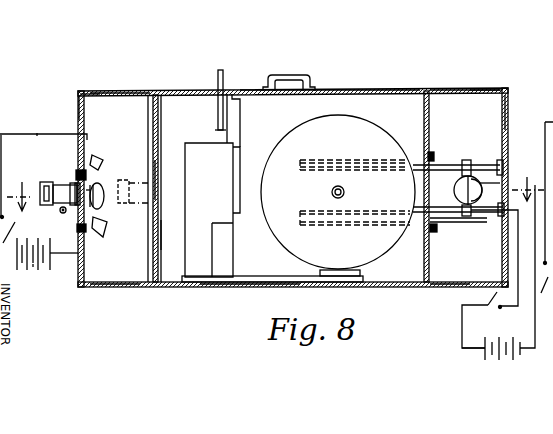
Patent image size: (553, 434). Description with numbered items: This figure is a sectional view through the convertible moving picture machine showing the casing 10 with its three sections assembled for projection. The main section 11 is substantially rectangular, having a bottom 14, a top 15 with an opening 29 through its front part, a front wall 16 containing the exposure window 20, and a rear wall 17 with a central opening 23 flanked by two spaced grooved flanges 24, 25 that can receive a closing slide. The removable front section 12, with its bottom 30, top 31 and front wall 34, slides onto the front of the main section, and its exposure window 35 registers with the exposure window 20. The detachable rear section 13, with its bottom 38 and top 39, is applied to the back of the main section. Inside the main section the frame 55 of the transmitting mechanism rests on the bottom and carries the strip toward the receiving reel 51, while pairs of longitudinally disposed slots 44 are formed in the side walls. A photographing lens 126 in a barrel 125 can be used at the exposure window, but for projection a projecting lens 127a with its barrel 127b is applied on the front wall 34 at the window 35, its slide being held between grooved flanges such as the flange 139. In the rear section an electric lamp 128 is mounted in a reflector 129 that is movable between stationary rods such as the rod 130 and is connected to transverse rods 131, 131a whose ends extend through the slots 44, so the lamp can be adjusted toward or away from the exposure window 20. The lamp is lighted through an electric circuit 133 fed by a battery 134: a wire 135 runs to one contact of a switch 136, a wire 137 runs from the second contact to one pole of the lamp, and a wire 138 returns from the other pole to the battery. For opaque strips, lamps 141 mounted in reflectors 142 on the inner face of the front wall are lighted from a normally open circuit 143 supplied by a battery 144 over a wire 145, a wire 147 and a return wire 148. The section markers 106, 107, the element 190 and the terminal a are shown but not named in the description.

The casing 10 is at (506, 88).
The main section 11 is at (355, 88).
The front section 12 is at (115, 92).
The rear section 13 is at (443, 90).
The bottom 14 is at (248, 283).
The top 15 is at (328, 90).
The front wall 16 is at (158, 112).
The rear wall 17 is at (508, 108).
The exposure window 20 is at (157, 178).
The opening 23 is at (426, 222).
The grooved flange 24 is at (433, 232).
The grooved flange 25 is at (432, 152).
The opening 29 is at (228, 93).
The bottom 30 is at (118, 288).
The top 31 is at (95, 93).
The front wall 34 is at (80, 108).
The exposure window 35 is at (90, 192).
The bottom 38 is at (443, 287).
The top 39 is at (478, 87).
The slots 44 is at (340, 222).
The receiving reel 51 is at (368, 130).
The frame 55 is at (233, 143).
The section indicator 106 is at (20, 184).
The tube 107 is at (218, 73).
The barrel 125 is at (157, 230).
The lens 126 is at (135, 208).
The projecting lens 127a is at (48, 178).
The barrel 127b is at (58, 210).
The electric lamp 128 is at (457, 191).
The reflector 129 is at (480, 158).
The stationary rod 130 is at (490, 163).
The transverse rod 131 is at (463, 162).
The transverse rod 131a is at (467, 222).
The electric circuit 133 is at (462, 348).
The battery 134 is at (485, 358).
The wire 135 is at (462, 323).
The switch 136 is at (487, 312).
The wire 137 is at (520, 268).
The wire 138 is at (535, 348).
The grooved flange 139 is at (76, 172).
The lamp 141 is at (106, 206).
The reflector 142 is at (97, 230).
The electric circuit 143 is at (37, 133).
The battery 144 is at (33, 267).
The wire 145 is at (3, 247).
The wire 147 is at (3, 135).
The wire 148 is at (60, 244).
The contact 190 is at (84, 232).
The terminal a is at (544, 199).